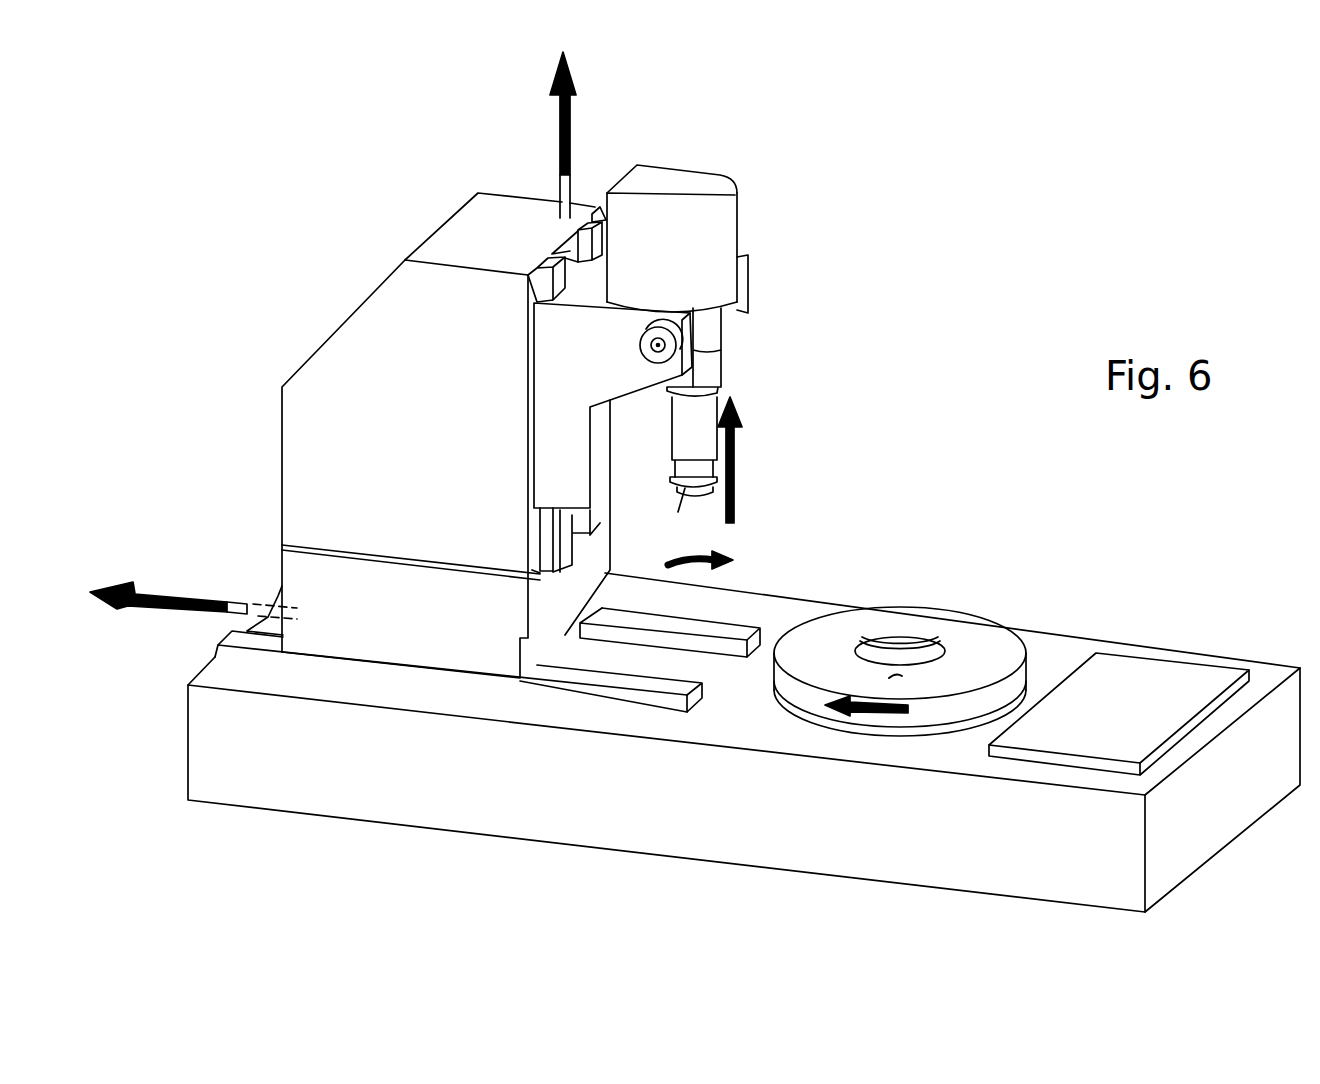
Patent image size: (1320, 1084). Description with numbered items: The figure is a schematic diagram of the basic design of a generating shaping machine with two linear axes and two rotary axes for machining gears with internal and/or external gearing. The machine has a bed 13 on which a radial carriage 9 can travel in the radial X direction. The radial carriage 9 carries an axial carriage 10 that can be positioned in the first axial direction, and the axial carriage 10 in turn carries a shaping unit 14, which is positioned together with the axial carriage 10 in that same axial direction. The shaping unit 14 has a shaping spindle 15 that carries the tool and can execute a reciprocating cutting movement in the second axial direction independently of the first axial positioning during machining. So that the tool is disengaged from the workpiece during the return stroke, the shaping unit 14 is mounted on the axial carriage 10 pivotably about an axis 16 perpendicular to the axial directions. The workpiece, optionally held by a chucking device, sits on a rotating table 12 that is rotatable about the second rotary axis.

The radial carriage 9 is at (300, 423).
The axial carriage 10 is at (558, 337).
The rotating table 12 is at (972, 637).
The bed 13 is at (413, 797).
The shaping unit 14 is at (723, 365).
The shaping spindle 15 is at (675, 487).
The axis 16 is at (653, 347).